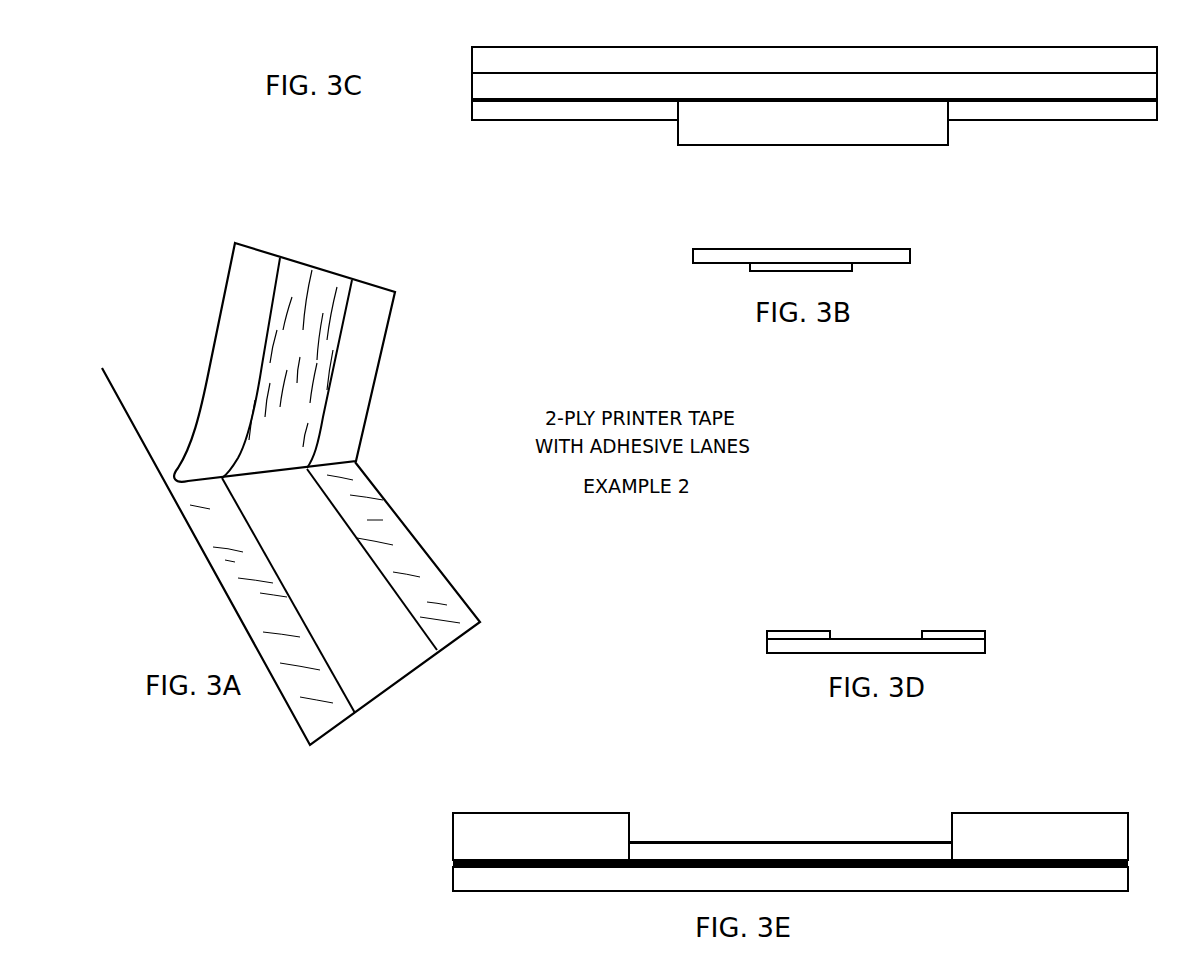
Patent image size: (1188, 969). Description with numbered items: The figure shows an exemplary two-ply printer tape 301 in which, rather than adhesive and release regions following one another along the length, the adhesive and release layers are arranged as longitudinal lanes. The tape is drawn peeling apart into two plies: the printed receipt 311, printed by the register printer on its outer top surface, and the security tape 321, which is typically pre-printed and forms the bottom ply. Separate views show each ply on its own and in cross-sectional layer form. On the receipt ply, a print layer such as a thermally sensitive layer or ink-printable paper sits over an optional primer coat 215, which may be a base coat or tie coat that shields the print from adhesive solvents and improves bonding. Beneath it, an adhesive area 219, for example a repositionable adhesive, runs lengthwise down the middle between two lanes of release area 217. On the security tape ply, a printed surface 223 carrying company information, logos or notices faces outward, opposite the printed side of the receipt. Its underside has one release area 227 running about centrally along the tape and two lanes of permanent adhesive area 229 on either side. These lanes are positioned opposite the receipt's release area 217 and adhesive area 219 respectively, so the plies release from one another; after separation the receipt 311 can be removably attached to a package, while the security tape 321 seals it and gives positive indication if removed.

In FIG. 3C, the printed surface 223 is at (470, 57).
In FIG. 3E, the printed surface 223 is at (447, 875).
In FIG. 3C, the primer coat 215 is at (468, 87).
In FIG. 3C, the release area 217 is at (467, 108).
In FIG. 3C, the adhesive area 219 is at (778, 152).
In FIG. 3B, the printed receipt 311 is at (675, 140).
In FIG. 3A, the 2-PLY tape 301 is at (128, 418).
In FIG. 3D, the security tape 321 is at (688, 782).
In FIG. 3E, the adhesive area 229 is at (447, 840).
In FIG. 3E, the release area 227 is at (806, 832).